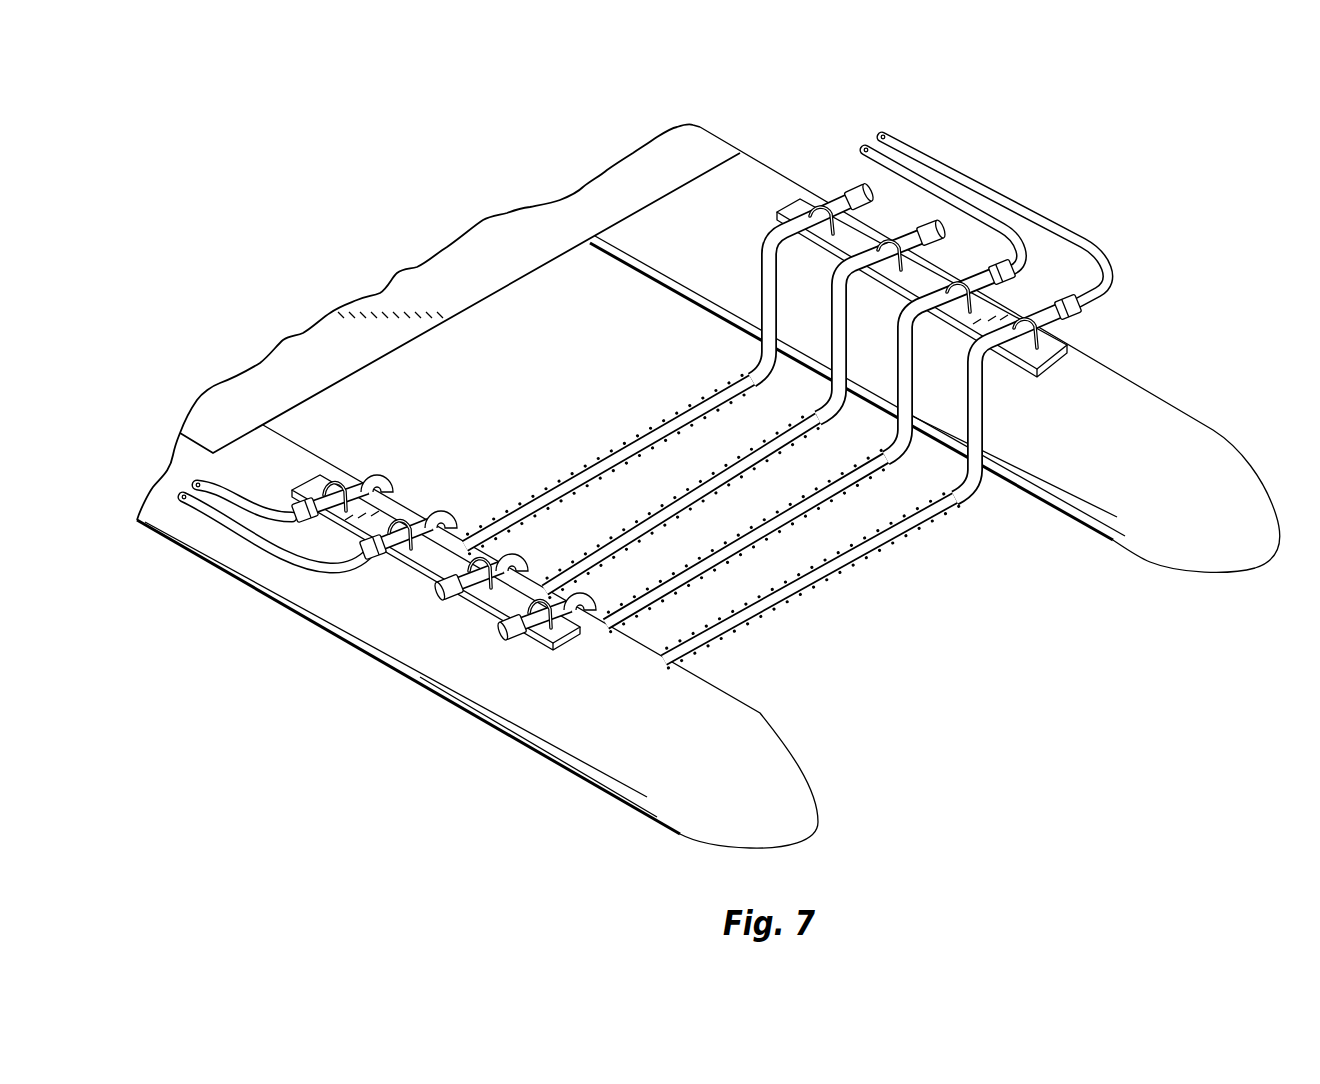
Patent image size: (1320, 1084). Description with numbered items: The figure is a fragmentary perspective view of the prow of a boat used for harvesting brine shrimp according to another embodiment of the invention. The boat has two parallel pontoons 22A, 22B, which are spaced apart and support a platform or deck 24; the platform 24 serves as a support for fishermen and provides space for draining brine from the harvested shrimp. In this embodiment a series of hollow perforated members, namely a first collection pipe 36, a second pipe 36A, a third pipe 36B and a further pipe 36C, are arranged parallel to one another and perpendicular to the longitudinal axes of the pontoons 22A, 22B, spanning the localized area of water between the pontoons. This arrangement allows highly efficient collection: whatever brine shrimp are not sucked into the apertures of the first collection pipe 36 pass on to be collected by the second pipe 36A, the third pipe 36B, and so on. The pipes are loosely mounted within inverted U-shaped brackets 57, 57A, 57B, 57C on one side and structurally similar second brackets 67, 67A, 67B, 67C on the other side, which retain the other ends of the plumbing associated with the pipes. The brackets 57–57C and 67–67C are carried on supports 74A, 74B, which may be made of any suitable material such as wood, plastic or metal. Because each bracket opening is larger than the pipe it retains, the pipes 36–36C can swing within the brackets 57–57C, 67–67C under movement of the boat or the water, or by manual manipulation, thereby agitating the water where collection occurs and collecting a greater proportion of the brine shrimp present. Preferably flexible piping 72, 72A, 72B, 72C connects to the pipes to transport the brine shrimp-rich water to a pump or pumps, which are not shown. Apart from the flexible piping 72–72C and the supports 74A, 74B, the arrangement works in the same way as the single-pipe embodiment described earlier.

The pontoon 22A is at (935, 349).
The pontoon 22B is at (723, 774).
The platform 24 is at (501, 266).
The hollow perforated member 36 is at (923, 516).
The second pipe 36A is at (790, 524).
The third pipe 36B is at (713, 487).
The hollow perforated member 36C is at (637, 454).
The bracket 57 is at (540, 638).
The bracket 57A is at (474, 588).
The bracket 57B is at (880, 246).
The bracket 57C is at (818, 200).
The second bracket 67 is at (1053, 332).
The bracket 67A is at (1006, 300).
The bracket 67B is at (432, 497).
The bracket 67C is at (329, 461).
The flexible piping 72 is at (1110, 243).
The flexible piping 72A is at (864, 146).
The flexible piping 72B is at (293, 563).
The flexible piping 72C is at (240, 499).
The support 74A is at (917, 284).
The support 74B is at (430, 553).